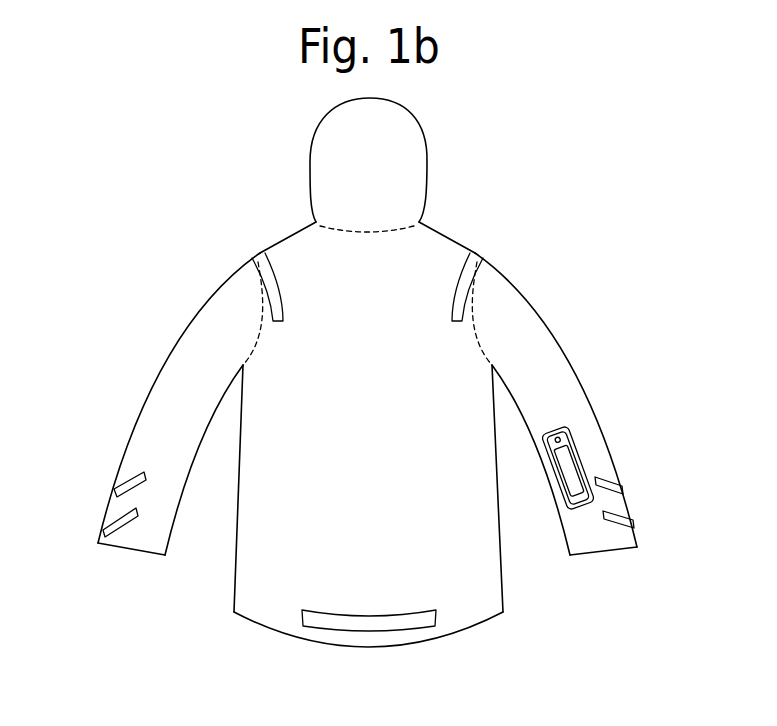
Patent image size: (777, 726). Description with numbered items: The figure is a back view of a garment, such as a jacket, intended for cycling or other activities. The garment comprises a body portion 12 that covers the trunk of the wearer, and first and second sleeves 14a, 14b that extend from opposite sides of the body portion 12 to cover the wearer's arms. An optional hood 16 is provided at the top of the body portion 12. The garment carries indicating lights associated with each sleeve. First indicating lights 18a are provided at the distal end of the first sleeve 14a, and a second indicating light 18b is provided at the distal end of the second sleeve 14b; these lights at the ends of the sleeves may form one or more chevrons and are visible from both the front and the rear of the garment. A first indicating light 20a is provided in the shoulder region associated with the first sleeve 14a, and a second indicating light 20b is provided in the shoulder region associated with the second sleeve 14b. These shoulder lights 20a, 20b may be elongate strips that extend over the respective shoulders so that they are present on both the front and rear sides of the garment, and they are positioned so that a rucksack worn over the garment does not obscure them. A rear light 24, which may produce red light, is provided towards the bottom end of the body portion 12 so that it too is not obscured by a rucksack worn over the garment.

The body portion 12 is at (465, 602).
The first sleeve 14a is at (555, 375).
The second sleeve 14b is at (168, 408).
The hood 16 is at (395, 127).
The first indicating lights 18a is at (618, 513).
The second indicating light 18b is at (120, 514).
The first indicating light 20a is at (470, 287).
The second indicating light 20b is at (270, 288).
The rear light 24 is at (347, 622).